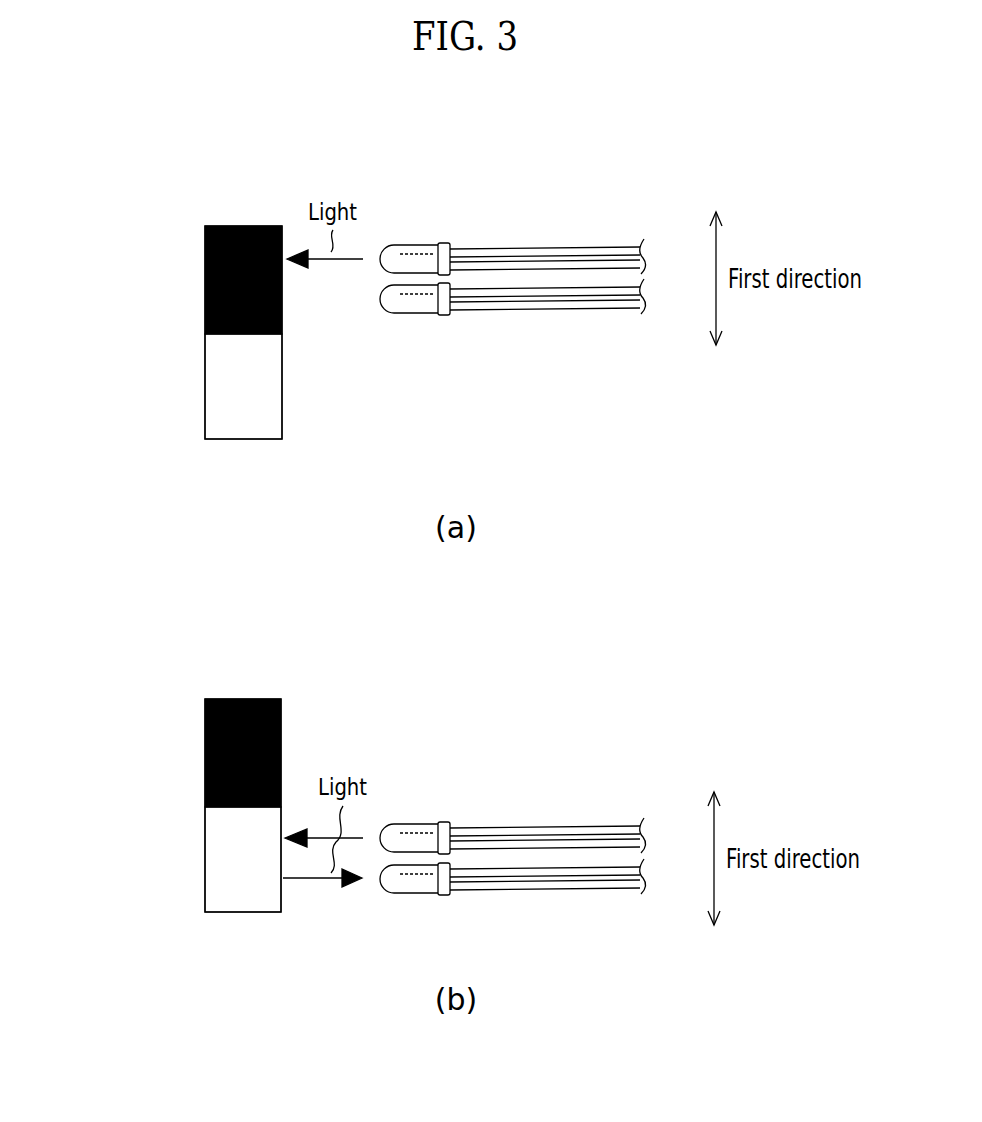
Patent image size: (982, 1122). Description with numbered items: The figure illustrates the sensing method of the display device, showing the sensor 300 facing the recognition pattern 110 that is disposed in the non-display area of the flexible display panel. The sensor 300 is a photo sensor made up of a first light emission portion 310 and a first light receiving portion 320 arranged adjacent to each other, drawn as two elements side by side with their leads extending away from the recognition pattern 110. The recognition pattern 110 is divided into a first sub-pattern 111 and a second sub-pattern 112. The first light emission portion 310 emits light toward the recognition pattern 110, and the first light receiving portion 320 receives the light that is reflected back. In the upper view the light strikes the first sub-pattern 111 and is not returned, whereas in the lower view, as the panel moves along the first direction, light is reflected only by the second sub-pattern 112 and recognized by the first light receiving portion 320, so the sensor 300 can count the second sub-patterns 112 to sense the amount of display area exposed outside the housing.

The recognition pattern 110 is at (125, 267).
The first sub-pattern 111 is at (205, 279).
The second sub-pattern 112 is at (223, 389).
The sensor 300 is at (568, 325).
The first light emission portion 310 is at (415, 252).
The first light receiving portion 320 is at (418, 303).